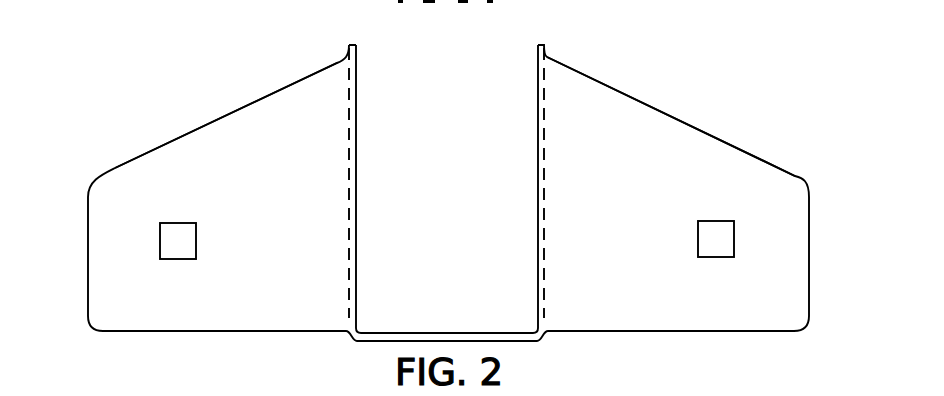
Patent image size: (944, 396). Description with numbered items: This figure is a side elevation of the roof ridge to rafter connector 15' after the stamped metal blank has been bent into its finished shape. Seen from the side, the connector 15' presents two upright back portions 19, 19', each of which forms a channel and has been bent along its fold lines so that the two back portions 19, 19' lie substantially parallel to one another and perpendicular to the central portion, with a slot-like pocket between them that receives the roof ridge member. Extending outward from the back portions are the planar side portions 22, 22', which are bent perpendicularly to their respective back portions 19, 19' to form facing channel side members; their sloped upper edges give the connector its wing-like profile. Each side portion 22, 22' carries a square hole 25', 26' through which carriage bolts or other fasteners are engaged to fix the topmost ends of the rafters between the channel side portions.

The connector 15' is at (481, 193).
The back portion 19' is at (310, 183).
The back portion 19 is at (571, 183).
The planar side portion 22' is at (226, 115).
The planar side portion 22 is at (671, 116).
The hole 26' is at (116, 251).
The hole 25' is at (781, 266).